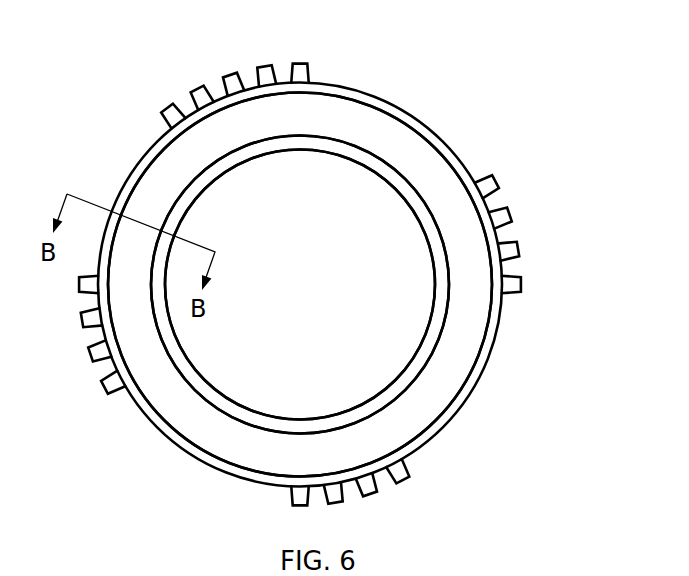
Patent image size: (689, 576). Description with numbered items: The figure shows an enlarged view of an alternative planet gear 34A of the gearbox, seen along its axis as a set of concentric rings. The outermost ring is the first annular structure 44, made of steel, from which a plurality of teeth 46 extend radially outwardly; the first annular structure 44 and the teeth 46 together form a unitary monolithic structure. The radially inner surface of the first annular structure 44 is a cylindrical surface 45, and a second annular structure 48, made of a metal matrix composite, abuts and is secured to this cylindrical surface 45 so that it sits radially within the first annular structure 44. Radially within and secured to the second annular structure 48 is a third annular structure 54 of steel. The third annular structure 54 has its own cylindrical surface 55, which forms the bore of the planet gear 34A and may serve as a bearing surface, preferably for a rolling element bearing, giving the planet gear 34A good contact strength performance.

The planet gear 34A is at (518, 148).
The first annular structure 44 is at (489, 345).
The cylindrical surface 45 is at (440, 410).
The teeth 46 is at (300, 76).
The second annular structure 48 is at (444, 383).
The third annular structure 54 is at (398, 174).
The cylindrical surface 55 is at (231, 403).